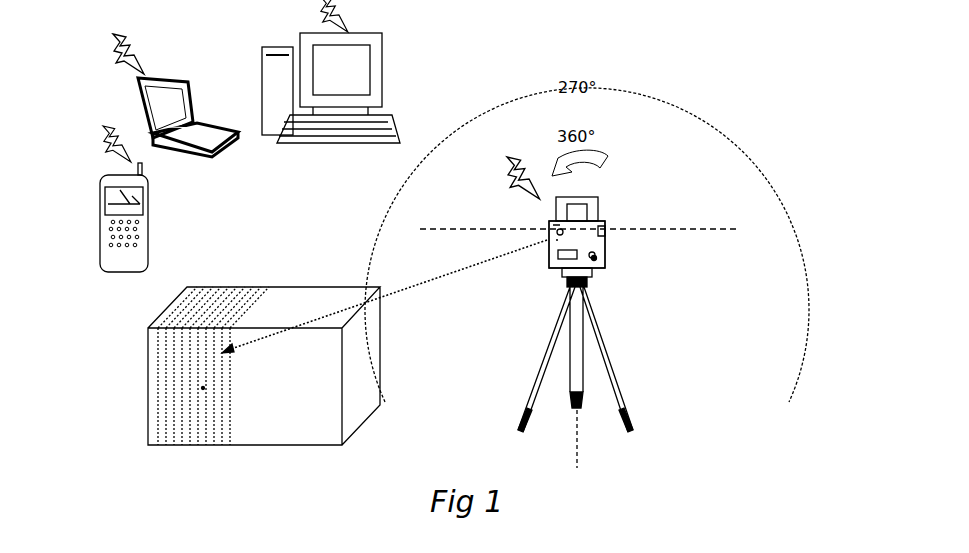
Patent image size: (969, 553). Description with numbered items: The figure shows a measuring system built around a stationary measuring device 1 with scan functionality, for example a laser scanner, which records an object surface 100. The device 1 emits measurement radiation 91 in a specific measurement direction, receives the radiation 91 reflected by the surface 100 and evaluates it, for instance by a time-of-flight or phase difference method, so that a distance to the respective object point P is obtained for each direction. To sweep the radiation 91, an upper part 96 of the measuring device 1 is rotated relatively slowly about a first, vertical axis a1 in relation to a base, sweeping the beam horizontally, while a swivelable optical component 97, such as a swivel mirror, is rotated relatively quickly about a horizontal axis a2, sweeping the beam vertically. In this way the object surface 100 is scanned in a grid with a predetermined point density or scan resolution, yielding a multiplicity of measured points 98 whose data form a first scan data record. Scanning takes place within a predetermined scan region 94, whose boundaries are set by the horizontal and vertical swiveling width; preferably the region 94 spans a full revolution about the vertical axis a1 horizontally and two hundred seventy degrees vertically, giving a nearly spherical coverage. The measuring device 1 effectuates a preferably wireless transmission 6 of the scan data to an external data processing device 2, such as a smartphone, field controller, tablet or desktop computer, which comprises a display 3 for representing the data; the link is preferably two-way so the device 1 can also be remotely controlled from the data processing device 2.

The stationary measuring device 1 is at (616, 205).
The external data processing device 2 is at (275, 127).
The display 3 is at (323, 62).
The transmission 6 is at (125, 36).
The measurement radiation 91 is at (395, 300).
The scan region 94 is at (697, 184).
The upper part 96 is at (541, 214).
The swivelable optical component 97 is at (602, 256).
The points 98 is at (202, 388).
The object surface 100 is at (264, 366).
The object point P is at (223, 433).
The vertical axis a1 is at (578, 442).
The horizontal axis a2 is at (607, 231).